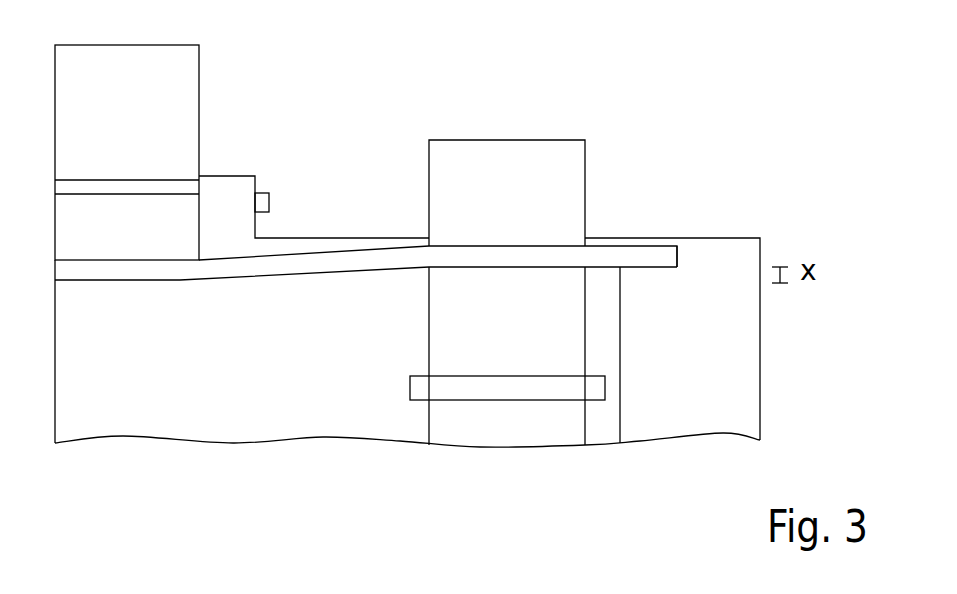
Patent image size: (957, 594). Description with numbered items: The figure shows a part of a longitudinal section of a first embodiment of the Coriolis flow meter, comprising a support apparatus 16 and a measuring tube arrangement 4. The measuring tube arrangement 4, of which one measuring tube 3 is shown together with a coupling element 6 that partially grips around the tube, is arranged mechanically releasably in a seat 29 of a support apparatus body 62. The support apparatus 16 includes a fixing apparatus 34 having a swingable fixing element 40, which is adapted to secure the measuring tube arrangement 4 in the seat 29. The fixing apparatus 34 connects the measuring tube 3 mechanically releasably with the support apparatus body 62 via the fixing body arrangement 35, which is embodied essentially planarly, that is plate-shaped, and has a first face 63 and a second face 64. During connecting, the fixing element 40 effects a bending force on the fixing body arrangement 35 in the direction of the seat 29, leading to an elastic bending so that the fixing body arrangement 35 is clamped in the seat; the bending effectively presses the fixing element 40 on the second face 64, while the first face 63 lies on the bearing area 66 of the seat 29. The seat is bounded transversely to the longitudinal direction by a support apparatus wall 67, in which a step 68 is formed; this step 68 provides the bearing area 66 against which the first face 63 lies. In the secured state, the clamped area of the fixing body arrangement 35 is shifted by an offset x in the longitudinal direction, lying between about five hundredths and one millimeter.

The measuring tube 3 is at (519, 422).
The measuring tube arrangement 4 is at (552, 290).
The coupling element 6 is at (578, 385).
The support apparatus 16 is at (228, 472).
The seat 29 is at (602, 325).
The fixing apparatus 34 is at (242, 237).
The fixing body arrangement 35 is at (428, 313).
The fixing element 40 is at (178, 137).
The support apparatus body 62 is at (711, 311).
The first face 63 is at (173, 294).
The second face 64 is at (342, 235).
The bearing area 66 is at (647, 270).
The support apparatus wall 67 is at (323, 372).
The step 68 is at (686, 243).